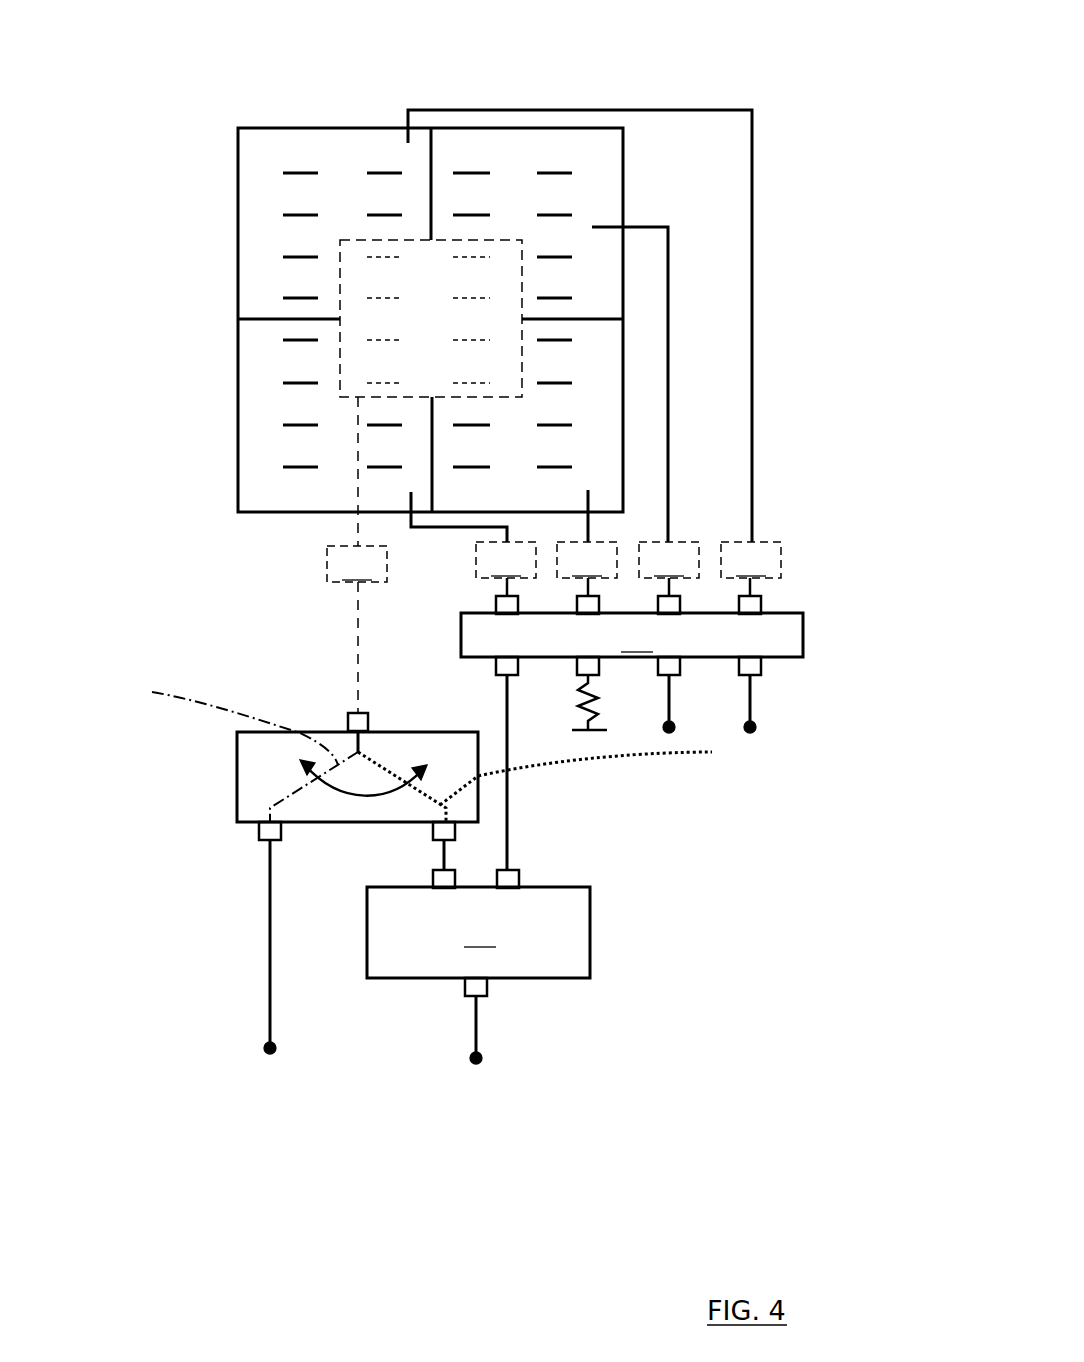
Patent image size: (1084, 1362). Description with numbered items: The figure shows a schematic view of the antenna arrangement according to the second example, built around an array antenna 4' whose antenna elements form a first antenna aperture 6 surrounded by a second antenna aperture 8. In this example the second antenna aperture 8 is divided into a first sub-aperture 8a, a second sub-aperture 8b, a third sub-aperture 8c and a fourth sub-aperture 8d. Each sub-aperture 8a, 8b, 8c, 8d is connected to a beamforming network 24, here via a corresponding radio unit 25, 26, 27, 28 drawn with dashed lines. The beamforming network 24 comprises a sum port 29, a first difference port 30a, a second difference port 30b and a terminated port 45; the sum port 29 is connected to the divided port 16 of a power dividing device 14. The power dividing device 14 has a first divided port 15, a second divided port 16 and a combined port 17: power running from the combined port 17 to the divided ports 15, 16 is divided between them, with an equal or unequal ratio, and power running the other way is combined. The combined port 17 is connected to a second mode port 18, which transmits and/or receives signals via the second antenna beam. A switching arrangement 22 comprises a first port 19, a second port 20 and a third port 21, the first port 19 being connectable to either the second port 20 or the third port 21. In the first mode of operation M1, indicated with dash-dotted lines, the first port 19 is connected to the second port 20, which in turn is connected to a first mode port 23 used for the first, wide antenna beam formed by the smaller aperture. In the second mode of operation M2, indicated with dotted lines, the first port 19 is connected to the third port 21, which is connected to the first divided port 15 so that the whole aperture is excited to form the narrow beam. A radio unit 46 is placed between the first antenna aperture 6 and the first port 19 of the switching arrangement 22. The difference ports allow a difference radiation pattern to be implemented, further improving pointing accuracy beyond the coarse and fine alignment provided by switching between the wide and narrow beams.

The fuel system 4' is at (212, 37).
The second antenna aperture 8 is at (238, 170).
The first sub-aperture 8a is at (260, 210).
The second sub-aperture 8b is at (477, 150).
The third sub-aperture 8c is at (263, 417).
The fourth sub-aperture 8d is at (458, 447).
The first antenna aperture 6 is at (340, 352).
The radio unit 46 is at (357, 555).
The radio unit 25 is at (473, 371).
The radio unit 26 is at (587, 552).
The radio unit 27 is at (645, 420).
The radio unit 28 is at (594, 362).
The beamforming network 24 is at (632, 635).
The sum port 29 is at (500, 665).
The terminated port 45 is at (588, 668).
The first difference port 30a is at (680, 668).
The second difference port 30b is at (755, 668).
The first port 19 is at (355, 715).
The switching arrangement 22 is at (257, 767).
The second port 20 is at (262, 830).
The third port 21 is at (435, 832).
The first mode of operation M1 is at (222, 721).
The second mode of operation M2 is at (602, 772).
The power dividing device 14 is at (478, 932).
The first divided port 15 is at (447, 874).
The second divided port 16 is at (513, 873).
The combined port 17 is at (487, 985).
The second mode port 18 is at (480, 1062).
The first mode port 23 is at (275, 1052).